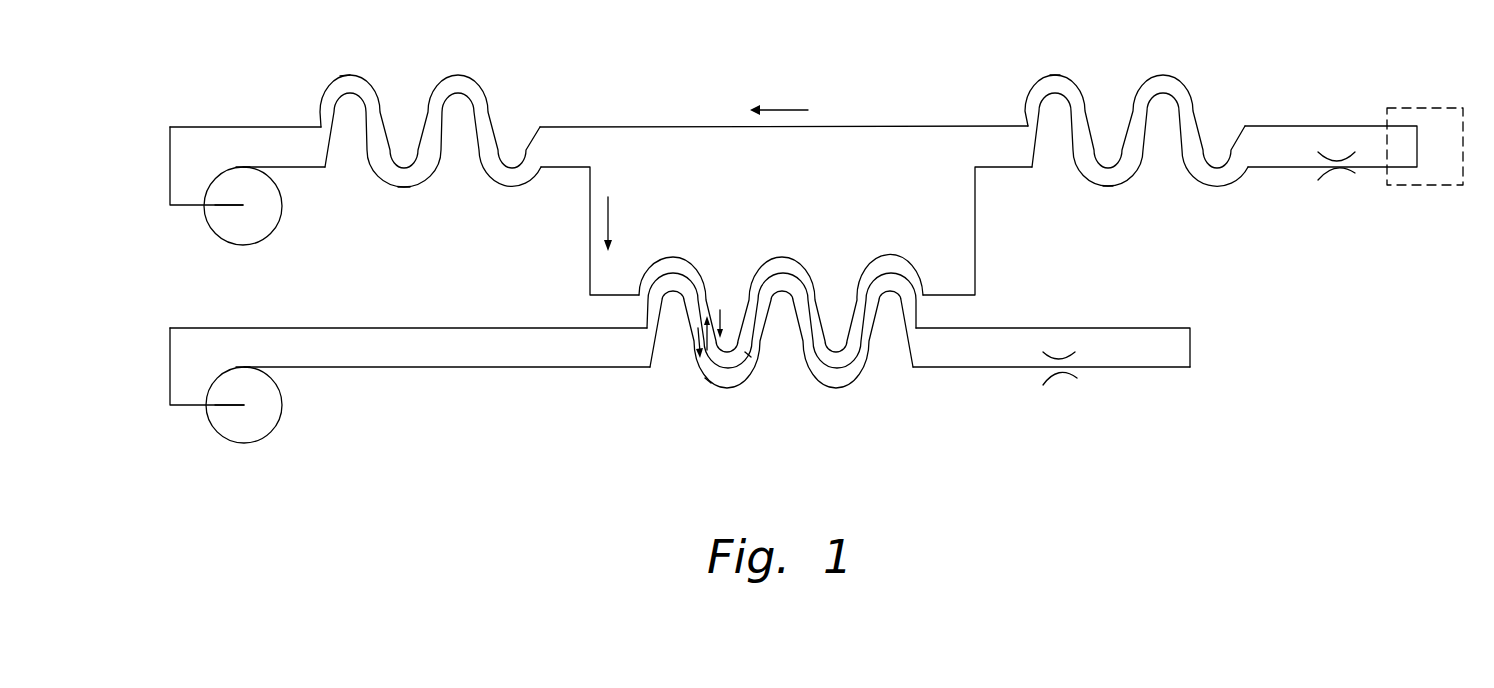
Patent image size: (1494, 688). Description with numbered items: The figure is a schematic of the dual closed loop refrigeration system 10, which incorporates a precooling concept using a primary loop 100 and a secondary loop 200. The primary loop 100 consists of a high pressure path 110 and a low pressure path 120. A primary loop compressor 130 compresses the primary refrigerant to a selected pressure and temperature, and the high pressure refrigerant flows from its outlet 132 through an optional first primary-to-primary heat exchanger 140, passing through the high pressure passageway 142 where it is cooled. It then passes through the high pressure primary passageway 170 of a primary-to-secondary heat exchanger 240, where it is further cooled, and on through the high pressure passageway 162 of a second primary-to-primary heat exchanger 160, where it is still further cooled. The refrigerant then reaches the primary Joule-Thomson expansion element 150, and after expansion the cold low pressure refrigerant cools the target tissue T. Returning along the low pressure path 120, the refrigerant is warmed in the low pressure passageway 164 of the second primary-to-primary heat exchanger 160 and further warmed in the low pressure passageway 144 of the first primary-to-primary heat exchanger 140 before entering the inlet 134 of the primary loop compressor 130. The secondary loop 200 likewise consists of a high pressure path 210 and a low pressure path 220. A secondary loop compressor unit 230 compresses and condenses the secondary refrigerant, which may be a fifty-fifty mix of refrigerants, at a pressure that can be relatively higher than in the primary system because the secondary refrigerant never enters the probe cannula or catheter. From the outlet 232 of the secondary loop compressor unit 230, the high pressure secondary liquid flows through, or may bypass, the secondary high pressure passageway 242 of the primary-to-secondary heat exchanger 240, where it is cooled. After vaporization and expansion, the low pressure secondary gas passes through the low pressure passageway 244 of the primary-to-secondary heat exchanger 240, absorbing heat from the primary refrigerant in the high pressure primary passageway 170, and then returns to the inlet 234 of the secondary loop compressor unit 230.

The dual closed loop refrigeration system 10 is at (884, 54).
The primary loop 100 is at (675, 96).
The high pressure path 110 is at (293, 167).
The low pressure path 120 is at (185, 125).
The primary loop compressor 130 is at (283, 210).
The outlet 132 is at (238, 167).
The inlet 134 is at (225, 205).
The first primary-to-primary heat exchanger 140 is at (457, 77).
The high pressure passageway 142 is at (405, 190).
The low pressure passageway 144 is at (345, 75).
The primary Joule-Thomson expansion element 150 is at (1355, 173).
The second primary-to-primary heat exchanger 160 is at (1162, 77).
The high pressure passageway 162 is at (1110, 187).
The low pressure passageway 164 is at (1057, 73).
The high pressure primary passageway 170 is at (675, 260).
The secondary loop 200 is at (574, 392).
The high pressure path 210 is at (453, 368).
The low pressure path 220 is at (430, 325).
The secondary loop compressor unit 230 is at (283, 407).
The outlet 232 is at (242, 367).
The inlet 234 is at (228, 407).
The primary-to-secondary heat exchanger 240 is at (730, 382).
The secondary high pressure passageway 242 is at (708, 380).
The low pressure passageway 244 is at (748, 355).
The target tissue T is at (1440, 108).